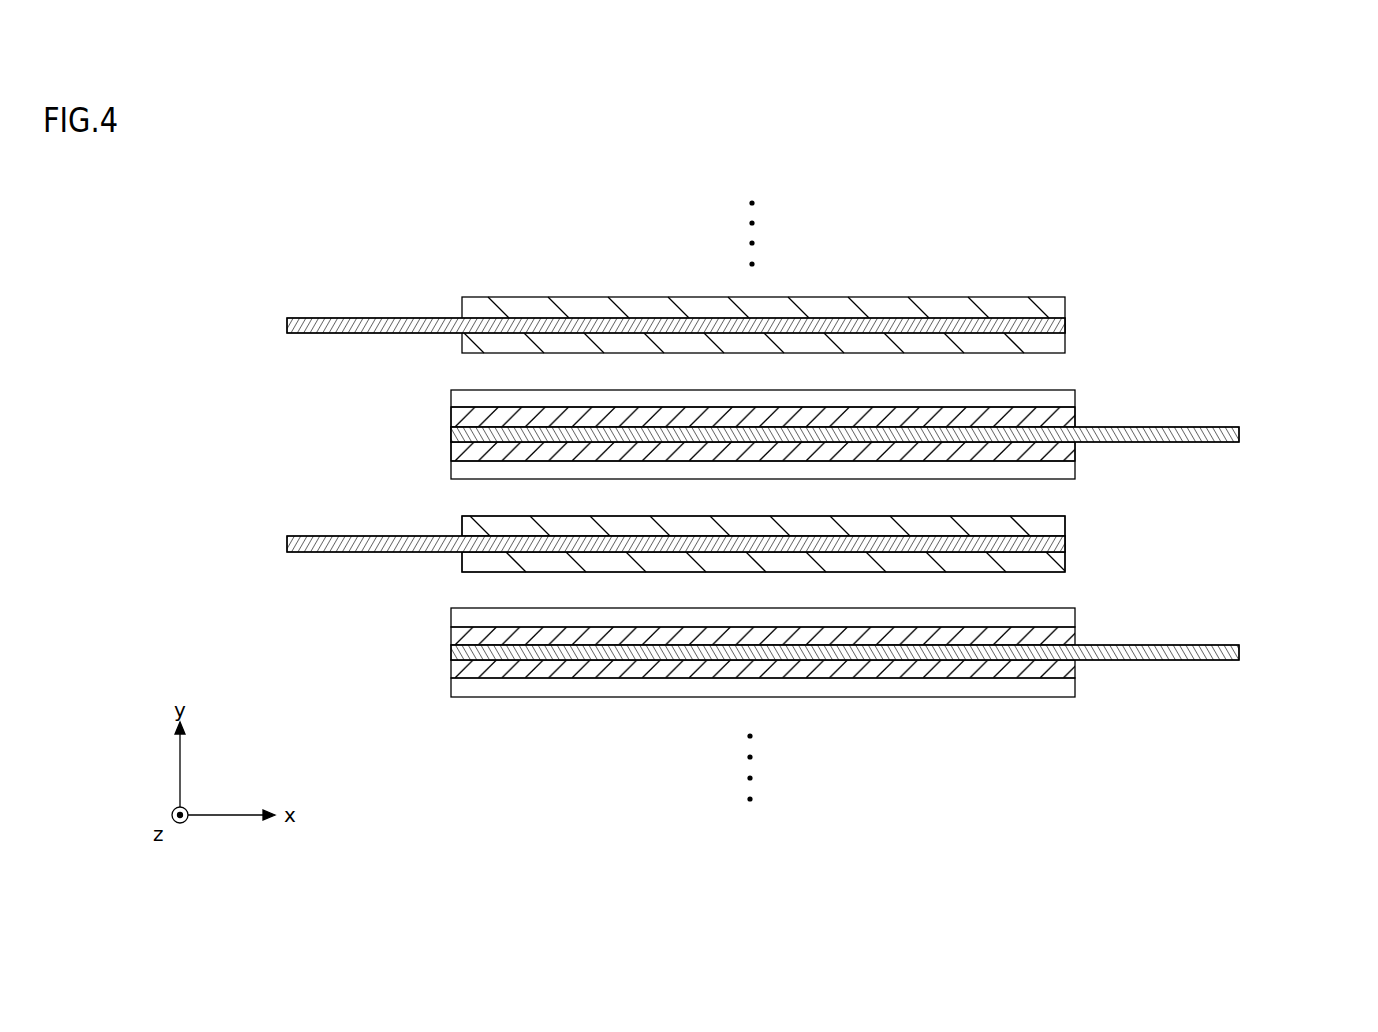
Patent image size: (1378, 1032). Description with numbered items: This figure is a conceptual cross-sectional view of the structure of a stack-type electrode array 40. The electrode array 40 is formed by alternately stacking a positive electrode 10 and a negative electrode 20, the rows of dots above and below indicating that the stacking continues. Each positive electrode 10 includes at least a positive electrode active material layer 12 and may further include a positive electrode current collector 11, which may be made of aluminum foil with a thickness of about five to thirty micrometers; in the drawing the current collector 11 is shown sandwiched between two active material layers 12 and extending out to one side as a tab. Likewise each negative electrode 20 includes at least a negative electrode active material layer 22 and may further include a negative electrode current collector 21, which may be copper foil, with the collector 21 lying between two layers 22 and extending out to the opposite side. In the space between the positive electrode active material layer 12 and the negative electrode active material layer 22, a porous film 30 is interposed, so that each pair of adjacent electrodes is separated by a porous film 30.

The positive electrode 10 is at (823, 544).
The positive electrode current collector 11 is at (1065, 543).
The positive electrode active material layer 12 is at (1065, 527).
The negative electrode 20 is at (905, 654).
The negative electrode current collector 21 is at (1239, 652).
The negative electrode active material layer 22 is at (1075, 635).
The porous film 30 is at (451, 620).
The electrode array 40 is at (423, 268).